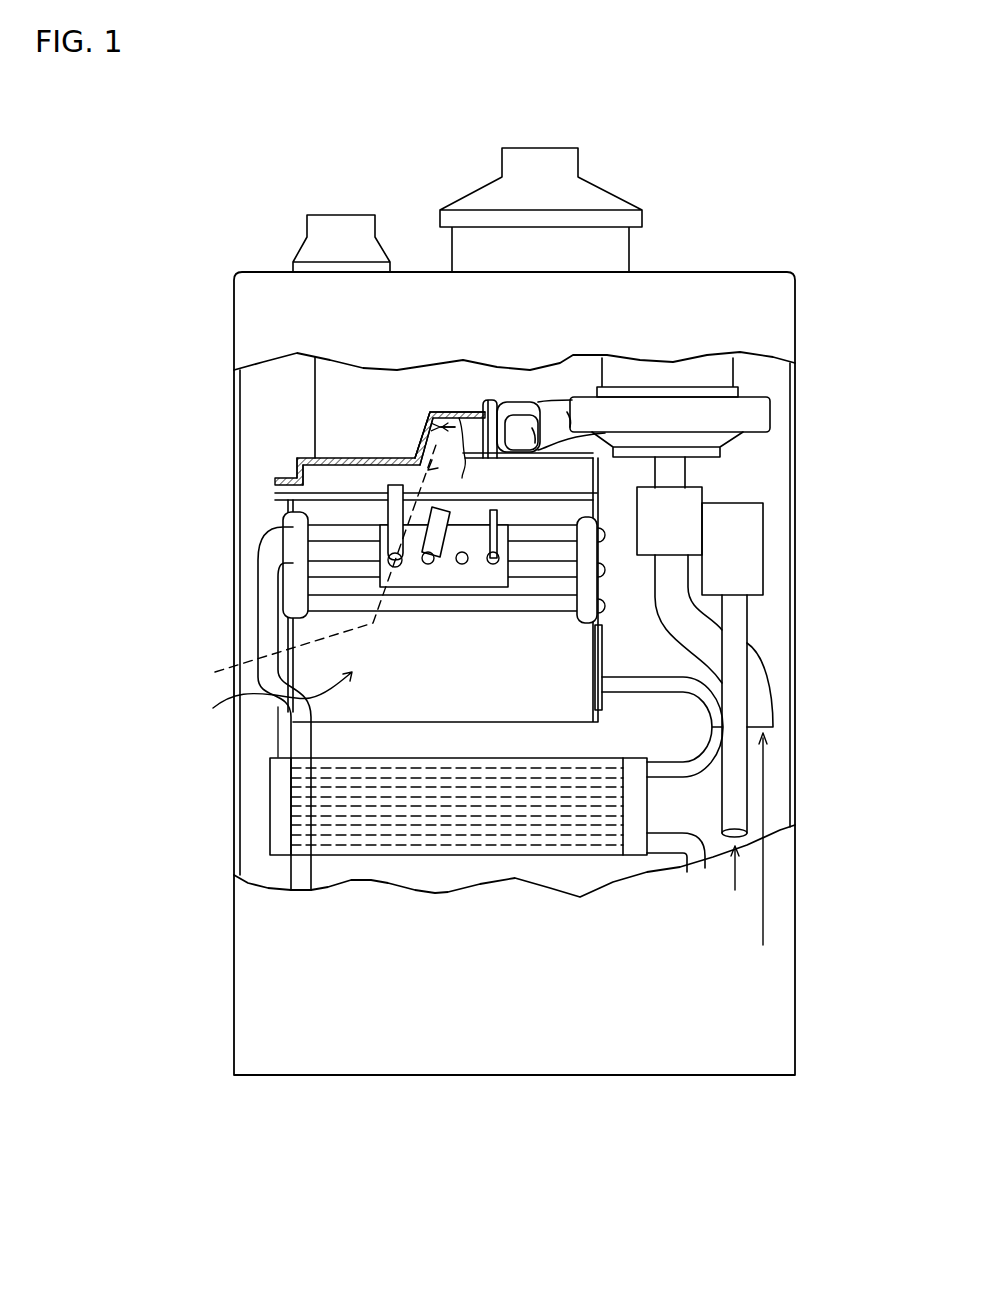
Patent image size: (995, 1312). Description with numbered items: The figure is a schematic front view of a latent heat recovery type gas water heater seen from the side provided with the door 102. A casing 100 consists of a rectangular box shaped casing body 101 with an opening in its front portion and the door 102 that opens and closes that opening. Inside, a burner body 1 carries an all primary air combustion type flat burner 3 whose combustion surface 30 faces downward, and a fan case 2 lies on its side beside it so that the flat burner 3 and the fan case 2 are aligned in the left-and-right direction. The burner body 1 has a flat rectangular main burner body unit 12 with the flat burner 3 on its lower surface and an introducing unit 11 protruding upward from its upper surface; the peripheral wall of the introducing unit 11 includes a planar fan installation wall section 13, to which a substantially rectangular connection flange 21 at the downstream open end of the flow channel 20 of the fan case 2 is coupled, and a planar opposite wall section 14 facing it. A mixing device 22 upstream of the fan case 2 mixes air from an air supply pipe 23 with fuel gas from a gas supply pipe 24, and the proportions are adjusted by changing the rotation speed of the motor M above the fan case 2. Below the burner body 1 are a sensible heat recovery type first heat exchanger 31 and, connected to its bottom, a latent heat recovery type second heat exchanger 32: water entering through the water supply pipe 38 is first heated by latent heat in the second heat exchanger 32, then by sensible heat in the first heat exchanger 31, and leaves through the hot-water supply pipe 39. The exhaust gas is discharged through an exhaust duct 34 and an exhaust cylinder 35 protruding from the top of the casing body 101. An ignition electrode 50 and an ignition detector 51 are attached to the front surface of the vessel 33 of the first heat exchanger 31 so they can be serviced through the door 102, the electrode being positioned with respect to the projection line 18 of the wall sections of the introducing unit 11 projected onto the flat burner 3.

The burner body 1 is at (316, 436).
The introducing unit 11 is at (417, 440).
The main burner body unit 12 is at (297, 477).
The fan installation wall section 13 is at (490, 403).
The opposite wall section 14 is at (423, 423).
The fan case 2 is at (763, 415).
The flat burner 3 is at (290, 493).
The projection line 18 is at (310, 563).
The flow channel 20 is at (553, 413).
The connection flange 21 is at (518, 408).
The mixing device 22 is at (695, 530).
The air supply pipe 23 is at (757, 683).
The gas supply pipe 24 is at (738, 617).
The combustion surface 30 is at (329, 512).
The first heat exchanger 31 is at (267, 697).
The second heat exchanger 32 is at (366, 753).
The vessel 33 is at (320, 587).
The exhaust duct 34 is at (313, 393).
The exhaust cylinder 35 is at (625, 248).
The water supply pipe 38 is at (660, 843).
The hot-water supply pipe 39 is at (265, 630).
The ignition electrode 50 is at (428, 565).
The ignition detector 51 is at (493, 565).
The casing 100 is at (544, 734).
The casing body 101 is at (795, 1067).
The door 102 is at (753, 1063).
The motor M is at (707, 367).